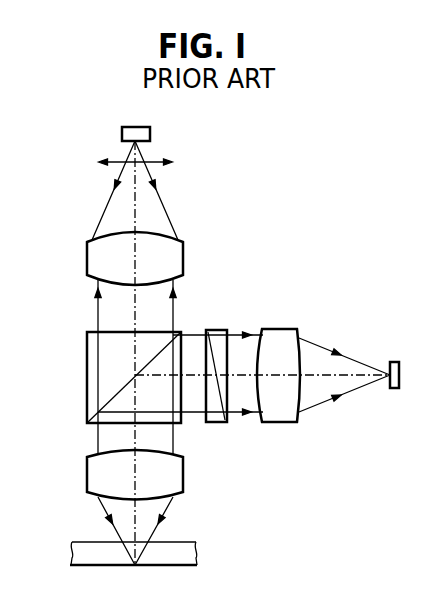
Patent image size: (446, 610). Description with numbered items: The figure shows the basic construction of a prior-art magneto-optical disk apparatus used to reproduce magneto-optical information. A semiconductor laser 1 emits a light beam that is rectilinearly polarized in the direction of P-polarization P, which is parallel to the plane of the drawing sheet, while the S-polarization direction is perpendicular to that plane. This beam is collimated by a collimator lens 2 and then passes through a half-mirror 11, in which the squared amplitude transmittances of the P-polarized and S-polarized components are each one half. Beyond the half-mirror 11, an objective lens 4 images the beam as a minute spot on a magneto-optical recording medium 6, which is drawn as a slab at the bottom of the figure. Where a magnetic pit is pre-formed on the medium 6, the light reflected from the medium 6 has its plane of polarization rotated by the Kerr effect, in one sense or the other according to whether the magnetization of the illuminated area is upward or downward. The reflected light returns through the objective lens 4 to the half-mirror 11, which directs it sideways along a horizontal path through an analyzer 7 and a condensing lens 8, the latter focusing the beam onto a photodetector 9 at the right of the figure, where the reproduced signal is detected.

The semiconductor laser 1 is at (122, 129).
The P-polarization direction P is at (143, 164).
The collimator lens 2 is at (87, 253).
The half-mirror 11 is at (87, 350).
The analyzer 7 is at (215, 330).
The condensing lens 8 is at (281, 330).
The photodetector 9 is at (393, 362).
The objective lens 4 is at (90, 475).
The magneto-optical recording medium 6 is at (112, 557).